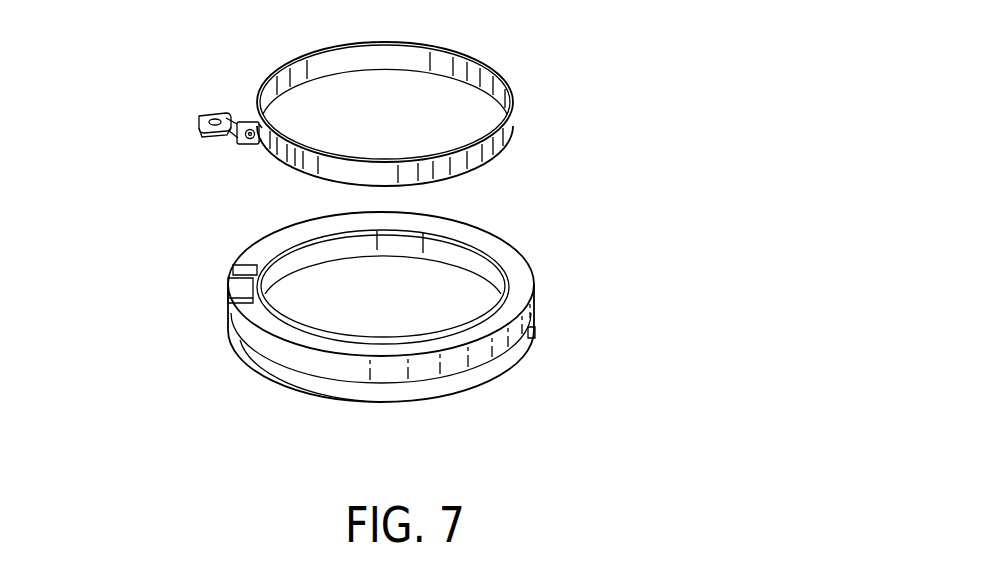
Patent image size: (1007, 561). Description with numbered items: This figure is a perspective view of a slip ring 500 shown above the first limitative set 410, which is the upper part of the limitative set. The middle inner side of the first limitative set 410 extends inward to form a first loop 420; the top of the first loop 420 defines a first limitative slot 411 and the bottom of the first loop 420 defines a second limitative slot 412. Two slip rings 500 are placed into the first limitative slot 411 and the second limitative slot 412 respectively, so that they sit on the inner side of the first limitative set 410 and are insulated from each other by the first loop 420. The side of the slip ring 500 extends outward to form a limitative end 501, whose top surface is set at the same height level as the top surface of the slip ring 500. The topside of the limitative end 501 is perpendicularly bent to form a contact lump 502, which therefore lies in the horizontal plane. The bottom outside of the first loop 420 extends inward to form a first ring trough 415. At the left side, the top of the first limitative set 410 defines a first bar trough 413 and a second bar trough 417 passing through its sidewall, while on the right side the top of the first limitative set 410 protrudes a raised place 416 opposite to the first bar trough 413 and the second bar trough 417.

The slip ring 500 is at (385, 105).
The limitative end 501 is at (237, 138).
The contact lump 502 is at (203, 118).
The first limitative set 410 is at (400, 304).
The first limitative slot 411 is at (345, 230).
The second limitative slot 412 is at (313, 272).
The first bar trough 413 is at (233, 303).
The first ring trough 415 is at (277, 380).
The raised place 416 is at (530, 338).
The second bar trough 417 is at (233, 272).
The first loop 420 is at (473, 260).